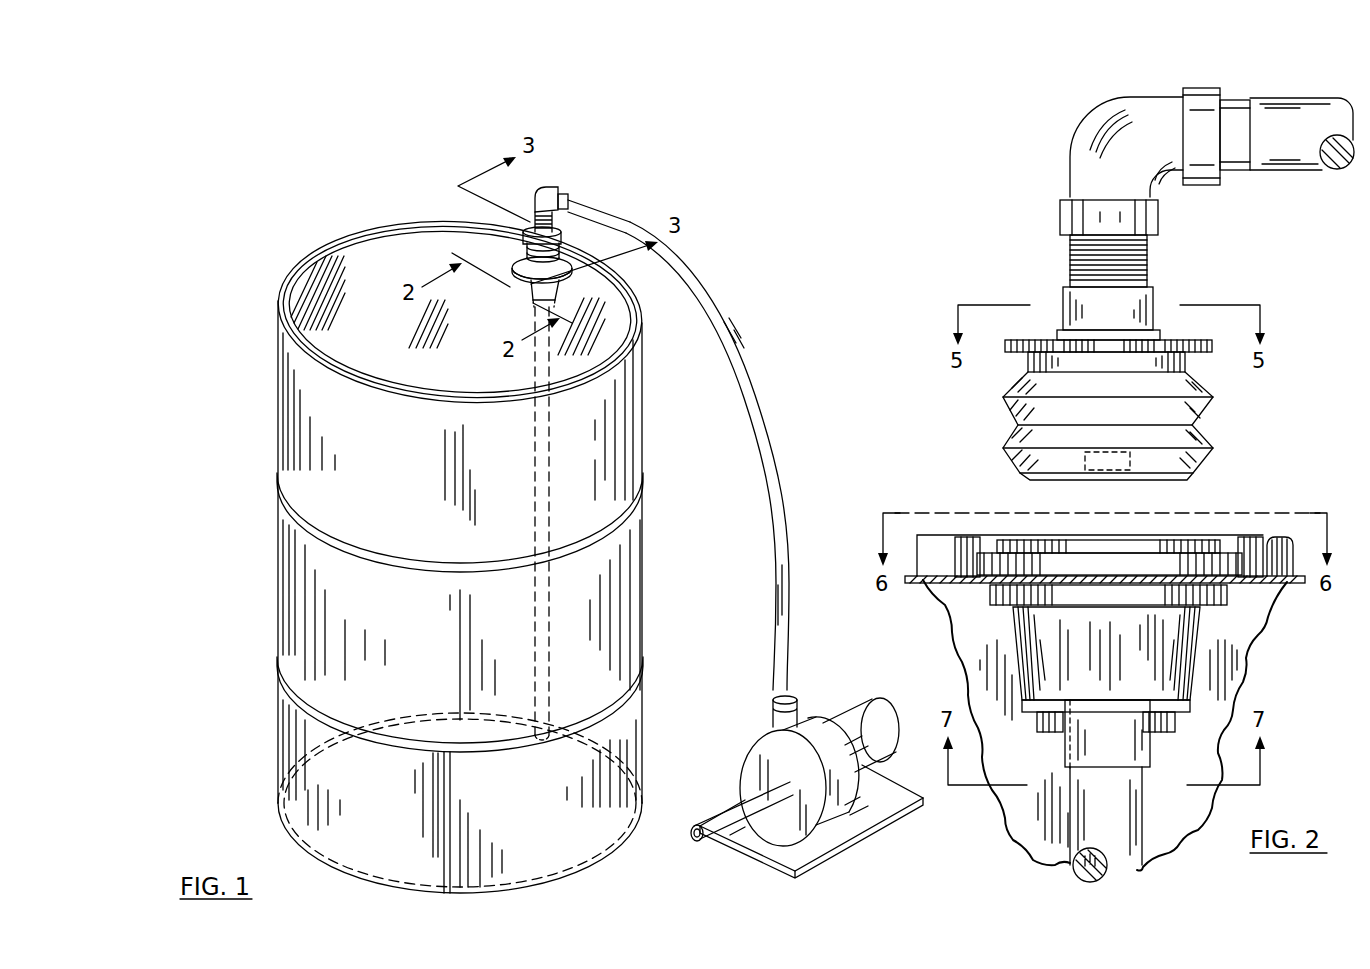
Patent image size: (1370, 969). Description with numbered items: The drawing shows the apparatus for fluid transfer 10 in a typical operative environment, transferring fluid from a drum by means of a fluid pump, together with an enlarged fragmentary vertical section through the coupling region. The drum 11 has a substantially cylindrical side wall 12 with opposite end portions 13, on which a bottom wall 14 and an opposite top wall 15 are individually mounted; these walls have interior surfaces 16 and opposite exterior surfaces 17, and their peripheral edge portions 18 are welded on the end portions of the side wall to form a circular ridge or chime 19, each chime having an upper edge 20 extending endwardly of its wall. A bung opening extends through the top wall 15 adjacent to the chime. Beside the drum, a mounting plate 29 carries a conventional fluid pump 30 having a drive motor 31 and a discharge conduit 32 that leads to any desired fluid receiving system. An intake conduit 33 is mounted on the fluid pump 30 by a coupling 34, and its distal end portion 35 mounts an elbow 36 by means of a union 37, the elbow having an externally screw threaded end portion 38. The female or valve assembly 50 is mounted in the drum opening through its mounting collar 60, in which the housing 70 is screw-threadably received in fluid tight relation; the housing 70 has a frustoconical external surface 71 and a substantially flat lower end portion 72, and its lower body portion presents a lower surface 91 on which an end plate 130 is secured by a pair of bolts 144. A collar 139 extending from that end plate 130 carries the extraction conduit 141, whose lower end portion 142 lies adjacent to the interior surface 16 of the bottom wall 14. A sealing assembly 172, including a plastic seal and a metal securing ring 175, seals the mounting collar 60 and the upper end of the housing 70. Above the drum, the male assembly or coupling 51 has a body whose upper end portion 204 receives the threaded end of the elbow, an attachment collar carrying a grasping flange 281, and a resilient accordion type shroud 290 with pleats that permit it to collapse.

In FIG. 1, the apparatus for fluid transfer 10 is at (654, 512).
In FIG. 2, the apparatus for fluid transfer 10 is at (1176, 261).
In FIG. 1, the drum 11 is at (428, 548).
In FIG. 1, the side wall 12 is at (290, 592).
In FIG. 1, the end portions 13 is at (288, 357).
In FIG. 1, the bottom wall 14 is at (626, 787).
In FIG. 1, the top wall 15 is at (640, 325).
In FIG. 2, the top wall 15 is at (1290, 593).
In FIG. 1, the interior surfaces 16 is at (622, 822).
In FIG. 2, the interior surfaces 16 is at (1252, 592).
In FIG. 1, the exterior surfaces 17 is at (392, 337).
In FIG. 2, the exterior surfaces 17 is at (1274, 541).
In FIG. 1, the peripheral edge portions 18 is at (333, 270).
In FIG. 1, the chime 19 is at (362, 237).
In FIG. 2, the chime 19 is at (1290, 550).
In FIG. 1, the upper edge 20 is at (288, 297).
In FIG. 2, the upper edge 20 is at (1235, 535).
In FIG. 1, the mounting plate 29 is at (878, 826).
In FIG. 1, the fluid pump 30 is at (809, 767).
In FIG. 1, the drive motor 31 is at (880, 712).
In FIG. 1, the discharge conduit 32 is at (728, 842).
In FIG. 1, the intake conduit 33 is at (789, 515).
In FIG. 1, the coupling 34 is at (778, 704).
In FIG. 1, the distal end portion 35 is at (590, 210).
In FIG. 2, the distal end portion 35 is at (1290, 100).
In FIG. 1, the elbow 36 is at (548, 187).
In FIG. 2, the elbow 36 is at (1110, 102).
In FIG. 1, the union 37 is at (566, 196).
In FIG. 2, the union 37 is at (1237, 93).
In FIG. 1, the externally screw threaded end portion 38 is at (535, 222).
In FIG. 2, the externally screw threaded end portion 38 is at (1070, 250).
In FIG. 1, the valve assembly 50 is at (535, 268).
In FIG. 2, the valve assembly 50 is at (1114, 733).
In FIG. 2, the coupling 51 is at (1149, 416).
In FIG. 2, the mounting collar 60 is at (990, 596).
In FIG. 2, the housing 70 is at (1147, 653).
In FIG. 2, the frustoconical external surface 71 is at (1104, 646).
In FIG. 2, the lower end portion 72 is at (1022, 705).
In FIG. 2, the lower surface 91 is at (1110, 710).
In FIG. 2, the lock nut 130 is at (1040, 720).
In FIG. 2, the collar 139 is at (1135, 775).
In FIG. 1, the extraction conduit 141 is at (546, 545).
In FIG. 2, the extraction conduit 141 is at (1134, 824).
In FIG. 1, the lower end portion 142 is at (534, 740).
In FIG. 2, the bolts 144 is at (1048, 735).
In FIG. 1, the sealing assembly 172 is at (522, 270).
In FIG. 2, the sealing assembly 172 is at (980, 542).
In FIG. 2, the metal securing ring 175 is at (1003, 563).
In FIG. 2, the upper end portion 204 is at (1075, 305).
In FIG. 2, the grasping flange 281 is at (1245, 330).
In FIG. 2, the shroud 290 is at (1210, 390).